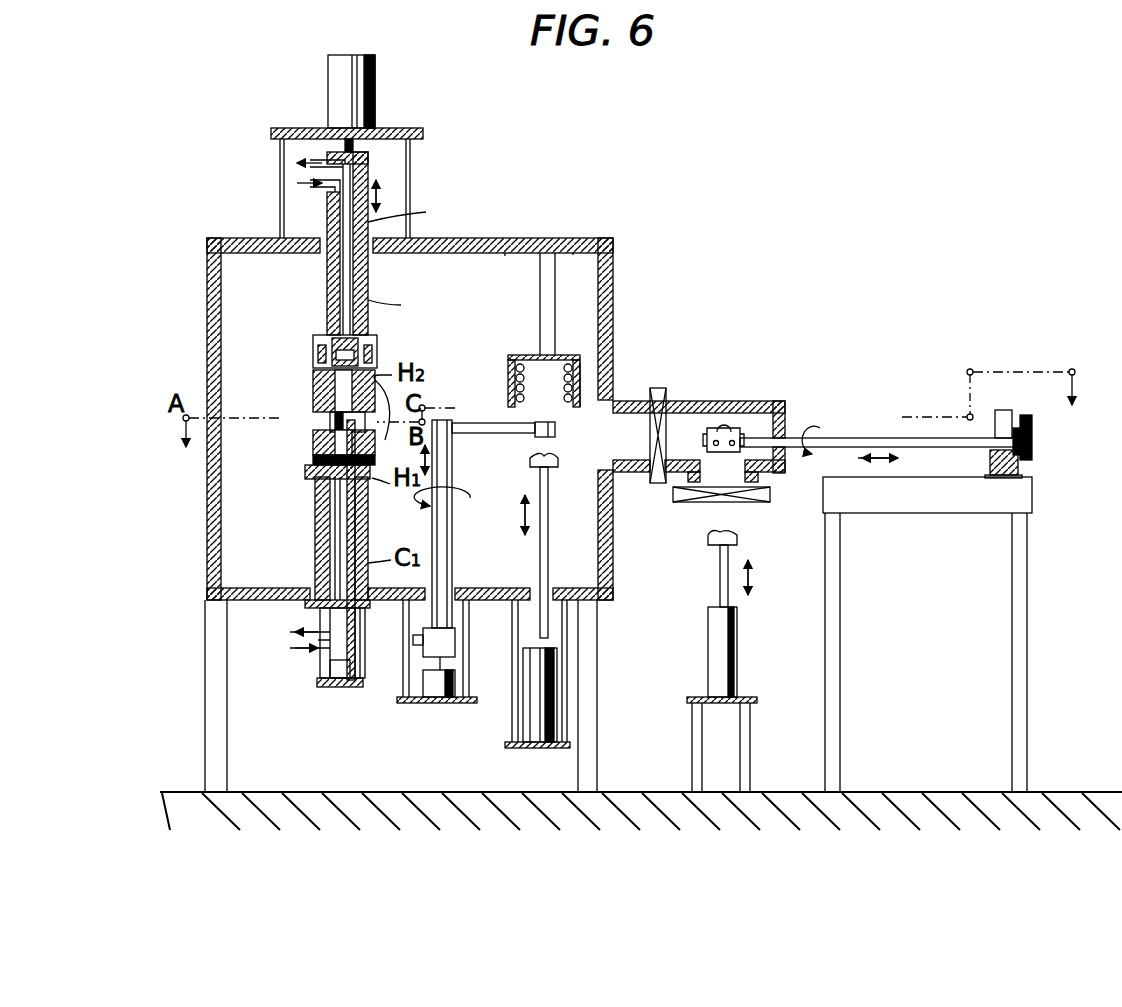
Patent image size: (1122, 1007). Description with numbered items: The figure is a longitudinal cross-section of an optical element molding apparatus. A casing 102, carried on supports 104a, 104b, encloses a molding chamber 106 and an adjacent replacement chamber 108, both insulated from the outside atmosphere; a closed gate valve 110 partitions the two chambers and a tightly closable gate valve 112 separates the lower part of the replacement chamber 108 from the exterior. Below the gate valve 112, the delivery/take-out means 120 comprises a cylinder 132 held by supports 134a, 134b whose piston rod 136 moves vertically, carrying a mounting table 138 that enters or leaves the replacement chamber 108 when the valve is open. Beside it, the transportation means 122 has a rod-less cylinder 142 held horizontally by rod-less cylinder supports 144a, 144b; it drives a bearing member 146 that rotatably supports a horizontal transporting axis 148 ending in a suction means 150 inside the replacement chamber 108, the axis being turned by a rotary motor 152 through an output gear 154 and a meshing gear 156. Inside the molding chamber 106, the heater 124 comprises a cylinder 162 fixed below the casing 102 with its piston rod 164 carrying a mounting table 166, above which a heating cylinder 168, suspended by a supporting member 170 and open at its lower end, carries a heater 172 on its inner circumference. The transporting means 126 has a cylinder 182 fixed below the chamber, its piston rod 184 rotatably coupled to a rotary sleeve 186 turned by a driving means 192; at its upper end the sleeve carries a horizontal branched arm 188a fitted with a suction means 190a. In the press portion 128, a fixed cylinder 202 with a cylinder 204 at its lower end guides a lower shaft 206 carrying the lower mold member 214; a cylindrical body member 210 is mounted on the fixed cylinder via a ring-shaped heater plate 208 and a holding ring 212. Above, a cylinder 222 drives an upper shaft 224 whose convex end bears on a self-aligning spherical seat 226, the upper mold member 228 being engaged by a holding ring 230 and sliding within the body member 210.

The casing 102 is at (615, 262).
The support 104a is at (227, 757).
The support 104b is at (597, 778).
The molding chamber 106 is at (490, 272).
The replacement chamber 108 is at (685, 425).
The gate valve 110 is at (656, 483).
The gate valve 112 is at (740, 502).
The delivery/take-out means 120 is at (700, 632).
The transportation means 122 is at (920, 385).
The heater 124 is at (522, 345).
The transporting means 126 is at (480, 400).
The press portion 128 is at (290, 313).
The cylinder 132 is at (737, 655).
The support 134a is at (692, 730).
The support 134b is at (752, 730).
The piston rod 136 is at (720, 570).
The mounting table 138 is at (708, 540).
The rod-less cylinder 142 is at (1032, 505).
The rod-less cylinder support 144a is at (840, 720).
The rod-less cylinder support 144b is at (1027, 720).
The bearing member 146 is at (1022, 470).
The transporting axis 148 is at (872, 438).
The suction means 150 is at (735, 430).
The rotary motor 152 is at (1008, 410).
The output gear 154 is at (1032, 425).
The gear 156 is at (1022, 450).
The cylinder 162 is at (523, 748).
The piston rod 164 is at (548, 580).
The mounting table 166 is at (548, 465).
The heating cylinder 168 is at (580, 362).
The supporting member 170 is at (573, 253).
The heater 172 is at (582, 390).
The cylinder 182 is at (445, 700).
The piston rod 184 is at (400, 703).
The rotary sleeve 186 is at (452, 570).
The branched arm 188a is at (480, 433).
The suction means 190a is at (555, 430).
The driving means 192 is at (413, 640).
The fixed cylinder 202 is at (315, 545).
The cylinder 204 is at (330, 672).
The lower shaft 206 is at (357, 515).
The heater plate 208 is at (313, 478).
The body member 210 is at (328, 425).
The holding ring 212 is at (315, 465).
The lower mold member 214 is at (318, 445).
The cylinder 222 is at (375, 90).
The upper shaft 224 is at (368, 270).
The spherical seat 226 is at (377, 343).
The upper mold member 228 is at (315, 390).
The holding ring 230 is at (315, 350).